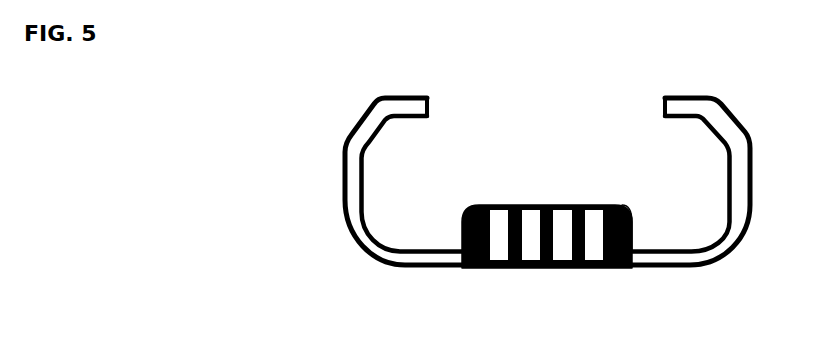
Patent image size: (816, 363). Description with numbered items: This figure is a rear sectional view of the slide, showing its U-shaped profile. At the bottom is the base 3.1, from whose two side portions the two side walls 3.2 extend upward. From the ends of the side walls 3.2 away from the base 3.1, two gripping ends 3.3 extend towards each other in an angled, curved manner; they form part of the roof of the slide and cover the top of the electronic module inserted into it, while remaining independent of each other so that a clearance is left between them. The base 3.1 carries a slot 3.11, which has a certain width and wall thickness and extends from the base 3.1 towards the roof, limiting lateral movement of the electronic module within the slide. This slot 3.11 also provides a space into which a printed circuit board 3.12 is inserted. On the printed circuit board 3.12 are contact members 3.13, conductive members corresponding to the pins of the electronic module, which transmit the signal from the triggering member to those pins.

The base 3.1 is at (672, 268).
The side walls 3.2 is at (344, 190).
The gripping ends 3.3 is at (348, 126).
The slot 3.11 is at (633, 205).
The printed circuit board 3.12 is at (538, 191).
The contact members 3.13 is at (594, 249).